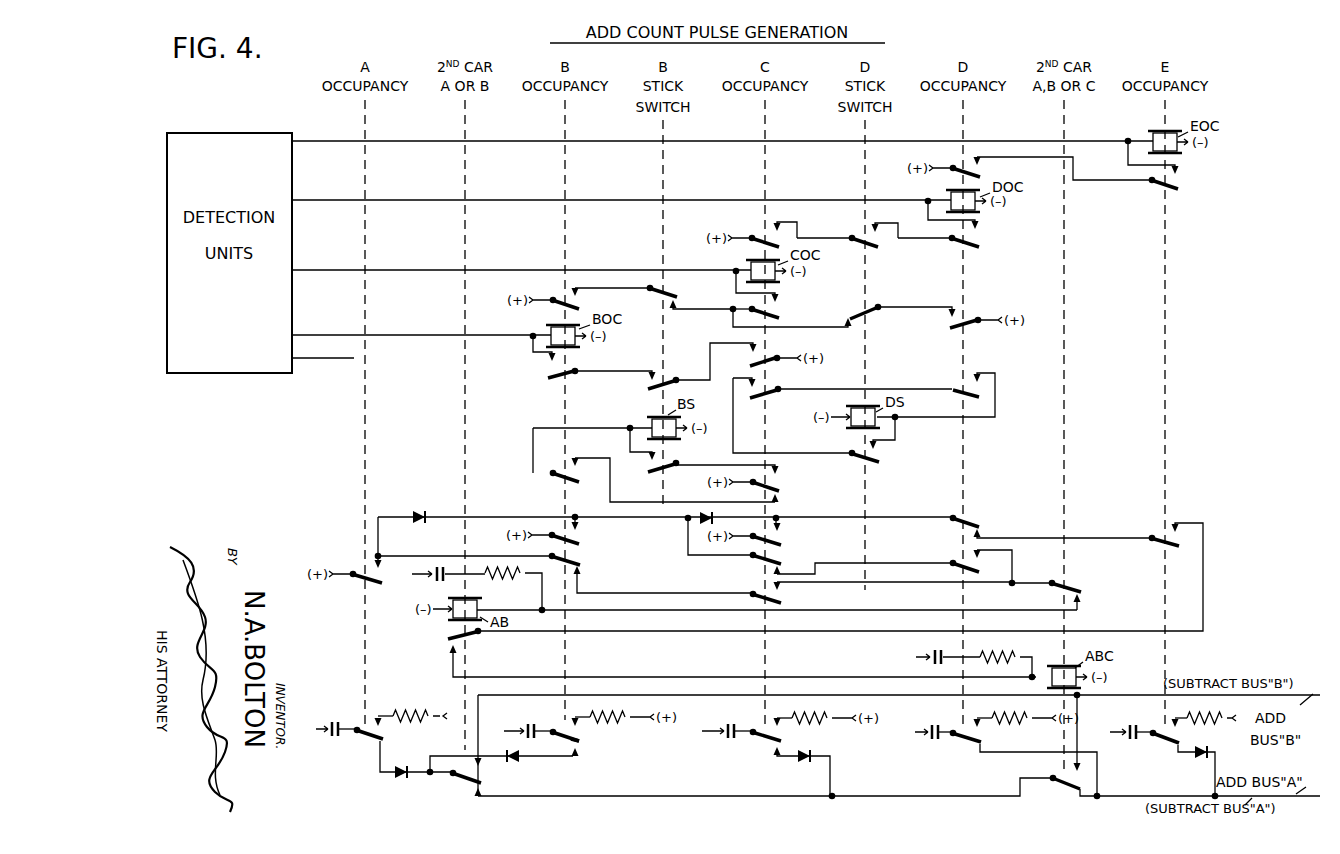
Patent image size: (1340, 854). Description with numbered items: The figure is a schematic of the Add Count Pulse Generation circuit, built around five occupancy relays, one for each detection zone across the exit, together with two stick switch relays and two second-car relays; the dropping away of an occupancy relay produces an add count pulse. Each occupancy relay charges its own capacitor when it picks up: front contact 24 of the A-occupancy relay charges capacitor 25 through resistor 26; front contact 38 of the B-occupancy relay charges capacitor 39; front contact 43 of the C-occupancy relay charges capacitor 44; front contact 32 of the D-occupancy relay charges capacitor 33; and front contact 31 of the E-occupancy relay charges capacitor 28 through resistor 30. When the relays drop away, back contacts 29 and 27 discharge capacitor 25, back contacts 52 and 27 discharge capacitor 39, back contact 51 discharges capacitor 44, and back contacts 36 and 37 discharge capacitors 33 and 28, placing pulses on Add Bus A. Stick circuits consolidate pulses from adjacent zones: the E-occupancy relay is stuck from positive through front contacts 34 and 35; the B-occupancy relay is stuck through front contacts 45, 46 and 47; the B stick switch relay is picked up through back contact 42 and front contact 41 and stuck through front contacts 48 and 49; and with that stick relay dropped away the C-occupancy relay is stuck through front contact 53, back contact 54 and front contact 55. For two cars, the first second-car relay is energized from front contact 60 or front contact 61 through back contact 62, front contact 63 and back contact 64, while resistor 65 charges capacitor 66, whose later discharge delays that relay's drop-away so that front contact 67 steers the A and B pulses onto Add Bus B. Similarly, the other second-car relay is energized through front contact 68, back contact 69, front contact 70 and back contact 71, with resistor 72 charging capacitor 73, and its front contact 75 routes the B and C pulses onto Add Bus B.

The front contact 24 is at (385, 727).
The capacitor 25 is at (343, 709).
The resistor 26 is at (411, 710).
The back contact 27 is at (472, 787).
The capacitor 28 is at (1132, 724).
The back contact 29 is at (376, 746).
The resistor 30 is at (1200, 716).
The front contact 31 is at (1180, 731).
The front contact 32 is at (982, 731).
The capacitor 33 is at (935, 722).
The front contact 34 is at (981, 164).
The front contact 35 is at (1180, 181).
The back contact 36 is at (977, 750).
The back contact 37 is at (1172, 751).
The front contact 38 is at (583, 731).
The capacitor 39 is at (539, 711).
The front contact 41 is at (578, 465).
The back contact 42 is at (780, 496).
The front contact 43 is at (784, 730).
The capacitor 44 is at (731, 722).
The front contact 45 is at (750, 352).
The front contact 46 is at (658, 379).
The front contact 47 is at (546, 363).
The front contact 48 is at (780, 472).
The front contact 49 is at (648, 459).
The back contact 51 is at (773, 752).
The back contact 52 is at (583, 749).
The front contact 53 is at (571, 296).
The back contact 54 is at (679, 297).
The front contact 55 is at (782, 303).
The front contact 60 is at (372, 565).
The front contact 61 is at (580, 531).
The back contact 62 is at (781, 569).
The front contact 63 is at (981, 566).
The back contact 64 is at (1082, 598).
The resistor 65 is at (510, 578).
The capacitor 66 is at (438, 580).
The front contact 67 is at (484, 765).
The front contact 68 is at (781, 532).
The back contact 69 is at (981, 526).
The front contact 70 is at (1177, 538).
The back contact 71 is at (450, 646).
The resistor 72 is at (1003, 657).
The capacitor 73 is at (936, 653).
The front contact 75 is at (1068, 776).